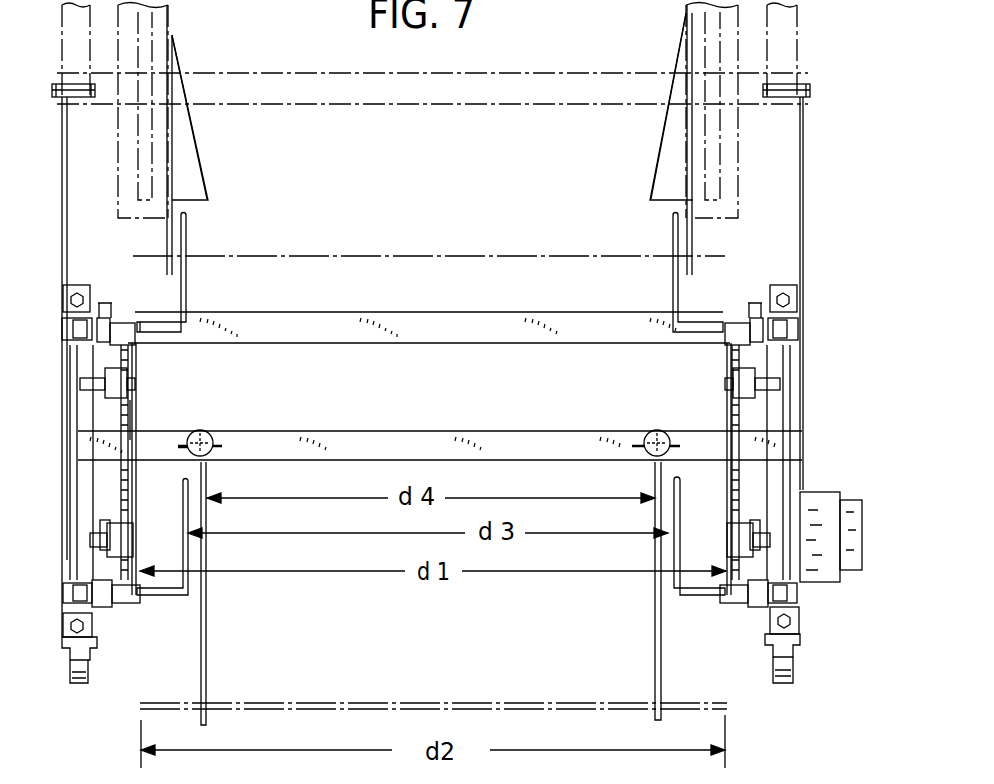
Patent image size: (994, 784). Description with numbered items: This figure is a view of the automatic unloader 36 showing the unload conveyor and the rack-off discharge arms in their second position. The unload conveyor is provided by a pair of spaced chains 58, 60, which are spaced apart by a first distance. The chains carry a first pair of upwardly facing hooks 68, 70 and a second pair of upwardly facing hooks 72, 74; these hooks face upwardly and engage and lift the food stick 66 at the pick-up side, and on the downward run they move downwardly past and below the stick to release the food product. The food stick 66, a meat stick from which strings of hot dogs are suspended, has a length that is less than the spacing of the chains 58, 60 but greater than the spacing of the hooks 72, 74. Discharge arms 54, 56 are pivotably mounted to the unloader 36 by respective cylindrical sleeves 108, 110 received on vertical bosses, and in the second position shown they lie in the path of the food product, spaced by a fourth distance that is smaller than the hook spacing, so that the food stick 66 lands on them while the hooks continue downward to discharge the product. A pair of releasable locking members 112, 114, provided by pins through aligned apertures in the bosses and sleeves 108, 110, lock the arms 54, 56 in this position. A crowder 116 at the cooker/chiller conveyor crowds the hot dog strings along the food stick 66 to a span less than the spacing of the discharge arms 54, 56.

The automatic unloader 36 is at (60, 385).
The discharge arm 54 is at (656, 628).
The discharge arm 56 is at (207, 656).
The chain 58 is at (726, 415).
The chain 60 is at (130, 415).
The food stick 66 is at (443, 256).
The upwardly facing hook 68 is at (672, 246).
The upwardly facing hook 70 is at (186, 243).
The upwardly facing hook 72 is at (680, 520).
The upwardly facing hook 74 is at (182, 527).
The cylindrical sleeve 108 is at (655, 430).
The cylindrical sleeve 110 is at (212, 437).
The releasable locking member 112 is at (640, 450).
The releasable locking member 114 is at (182, 445).
The crowder 116 is at (203, 182).